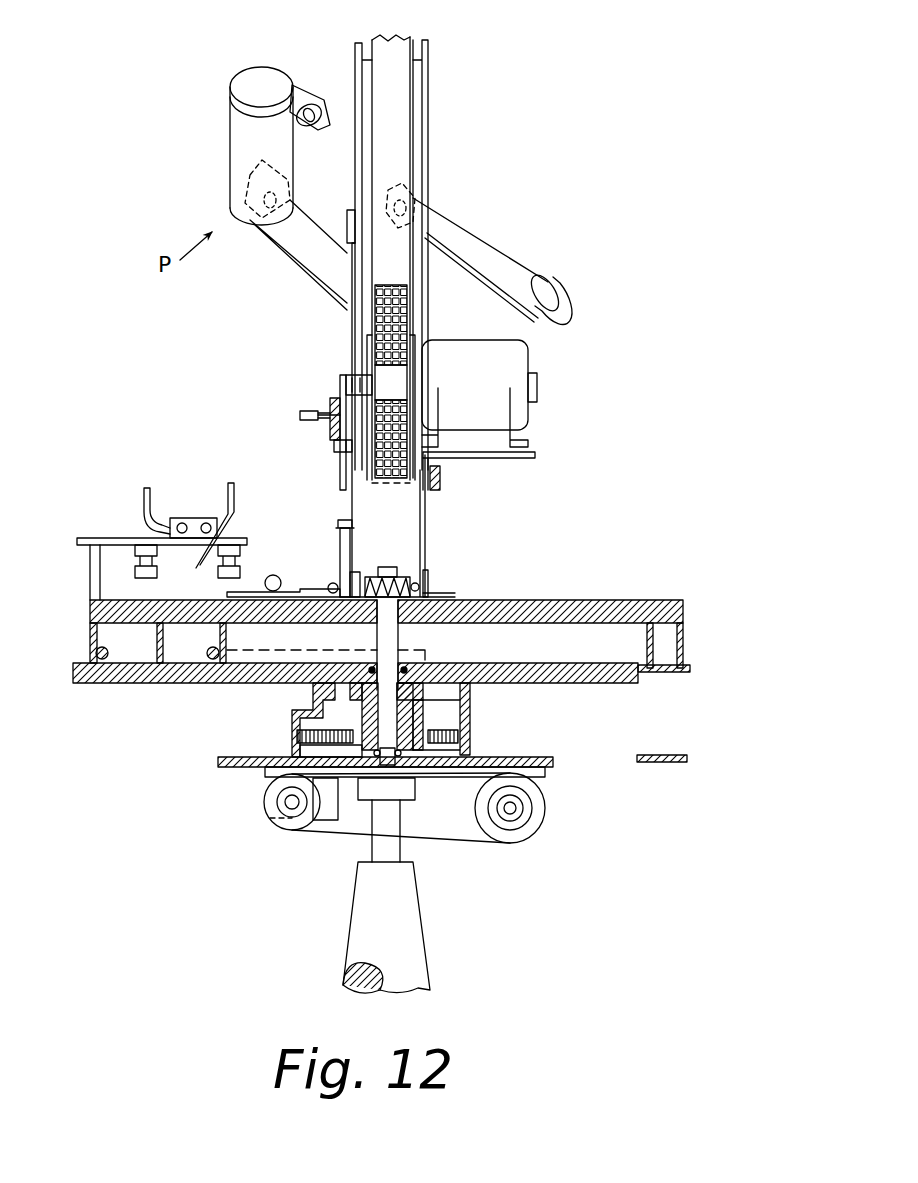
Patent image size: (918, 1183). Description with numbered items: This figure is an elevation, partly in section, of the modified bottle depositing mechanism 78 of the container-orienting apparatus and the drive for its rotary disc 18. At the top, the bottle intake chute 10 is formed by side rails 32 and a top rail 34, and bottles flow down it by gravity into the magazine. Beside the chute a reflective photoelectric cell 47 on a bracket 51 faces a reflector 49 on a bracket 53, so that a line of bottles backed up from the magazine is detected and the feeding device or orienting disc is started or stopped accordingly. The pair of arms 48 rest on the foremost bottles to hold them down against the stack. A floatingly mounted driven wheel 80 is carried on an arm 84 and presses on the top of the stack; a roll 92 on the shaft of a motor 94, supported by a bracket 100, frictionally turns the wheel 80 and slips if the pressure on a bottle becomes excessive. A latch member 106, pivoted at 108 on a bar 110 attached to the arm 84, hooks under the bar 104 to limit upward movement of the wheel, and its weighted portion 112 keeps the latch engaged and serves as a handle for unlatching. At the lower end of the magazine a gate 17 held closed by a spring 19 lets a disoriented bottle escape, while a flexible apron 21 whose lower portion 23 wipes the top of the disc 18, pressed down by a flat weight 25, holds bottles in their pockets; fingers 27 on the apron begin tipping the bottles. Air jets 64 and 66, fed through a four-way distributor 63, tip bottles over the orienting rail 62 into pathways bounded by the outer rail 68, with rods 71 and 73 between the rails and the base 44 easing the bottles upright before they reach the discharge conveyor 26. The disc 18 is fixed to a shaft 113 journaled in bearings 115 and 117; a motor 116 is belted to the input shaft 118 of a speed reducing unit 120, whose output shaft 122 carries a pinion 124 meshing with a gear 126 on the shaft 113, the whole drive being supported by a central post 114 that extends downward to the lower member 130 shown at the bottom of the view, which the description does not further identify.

The bottle intake chute 10 is at (440, 133).
The gate 17 is at (345, 562).
The rotary conveyor disc 18 is at (600, 603).
The spring 19 is at (405, 585).
The flexible apron 21 is at (306, 580).
The lower portion of apron 23 is at (324, 588).
The weight 25 is at (270, 600).
The discharge conveyor 26 is at (672, 753).
The fingers 27 is at (244, 592).
The side rails 32 is at (357, 48).
The top rail 34 is at (405, 80).
The base 44 is at (625, 685).
The photoelectric cell 47 is at (235, 138).
The arms 48 is at (367, 340).
The reflector 49 is at (556, 293).
The bracket 51 is at (304, 217).
The bracket 53 is at (463, 233).
The orienting rail 62 is at (160, 662).
The four-way distributor 63 is at (188, 518).
The air jet 64 is at (218, 572).
The air jet 66 is at (135, 568).
The outer rail 68 is at (90, 628).
The rod 71 is at (213, 668).
The rod 73 is at (78, 684).
The bottle depositing mechanism 78 is at (436, 318).
The driven wheel 80 is at (398, 292).
The arm 84 is at (358, 385).
The roll 92 is at (403, 387).
The motor 94 is at (532, 356).
The bracket 100 is at (520, 458).
The bar 104 is at (340, 446).
The latch member 106 is at (387, 499).
The pivot 108 is at (333, 428).
The bar 110 is at (340, 381).
The weighted portion 112 is at (300, 418).
The shaft 113 is at (405, 645).
The central post 114 is at (403, 845).
The bearing 115 is at (444, 683).
The motor 116 is at (540, 817).
The bearing 117 is at (455, 757).
The input shaft 118 is at (277, 806).
The speed reducing unit 120 is at (327, 815).
The output shaft 122 is at (270, 740).
The pinion 124 is at (300, 738).
The gear 126 is at (450, 722).
The cutting tool 130 is at (415, 921).